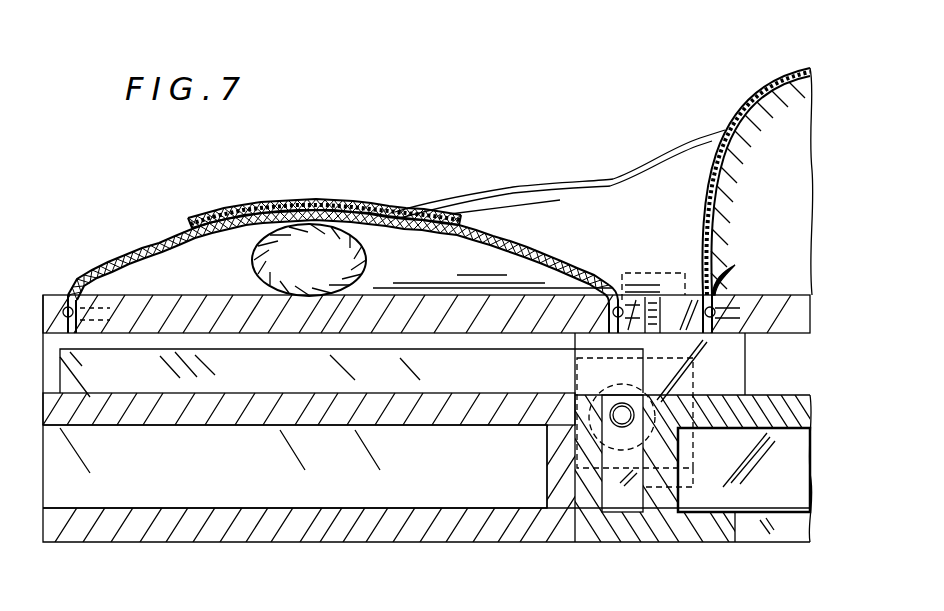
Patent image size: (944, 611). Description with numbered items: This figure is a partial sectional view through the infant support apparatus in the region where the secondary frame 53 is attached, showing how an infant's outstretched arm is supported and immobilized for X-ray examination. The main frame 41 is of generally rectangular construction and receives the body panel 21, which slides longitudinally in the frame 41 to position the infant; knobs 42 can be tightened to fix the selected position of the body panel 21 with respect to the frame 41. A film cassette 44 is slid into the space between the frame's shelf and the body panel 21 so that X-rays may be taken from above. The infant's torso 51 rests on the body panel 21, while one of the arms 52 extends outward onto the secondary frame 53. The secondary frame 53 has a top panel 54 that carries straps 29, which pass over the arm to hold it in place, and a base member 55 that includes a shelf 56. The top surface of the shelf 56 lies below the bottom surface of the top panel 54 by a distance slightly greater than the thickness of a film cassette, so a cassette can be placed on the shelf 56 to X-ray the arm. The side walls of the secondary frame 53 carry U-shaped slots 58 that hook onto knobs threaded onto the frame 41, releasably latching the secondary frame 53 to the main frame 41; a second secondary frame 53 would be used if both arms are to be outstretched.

The body panel 21 is at (796, 312).
The straps 29 is at (148, 247).
The frame 41 is at (693, 546).
The knobs 42 is at (645, 272).
The film cassette 44 is at (279, 390).
The infant's torso 51 is at (748, 112).
The arms 52 is at (368, 276).
The secondary frame 53 is at (150, 543).
The top panel 54 is at (185, 296).
The base member 55 is at (337, 540).
The shelf 56 is at (355, 413).
The U-shaped slots 58 is at (744, 481).